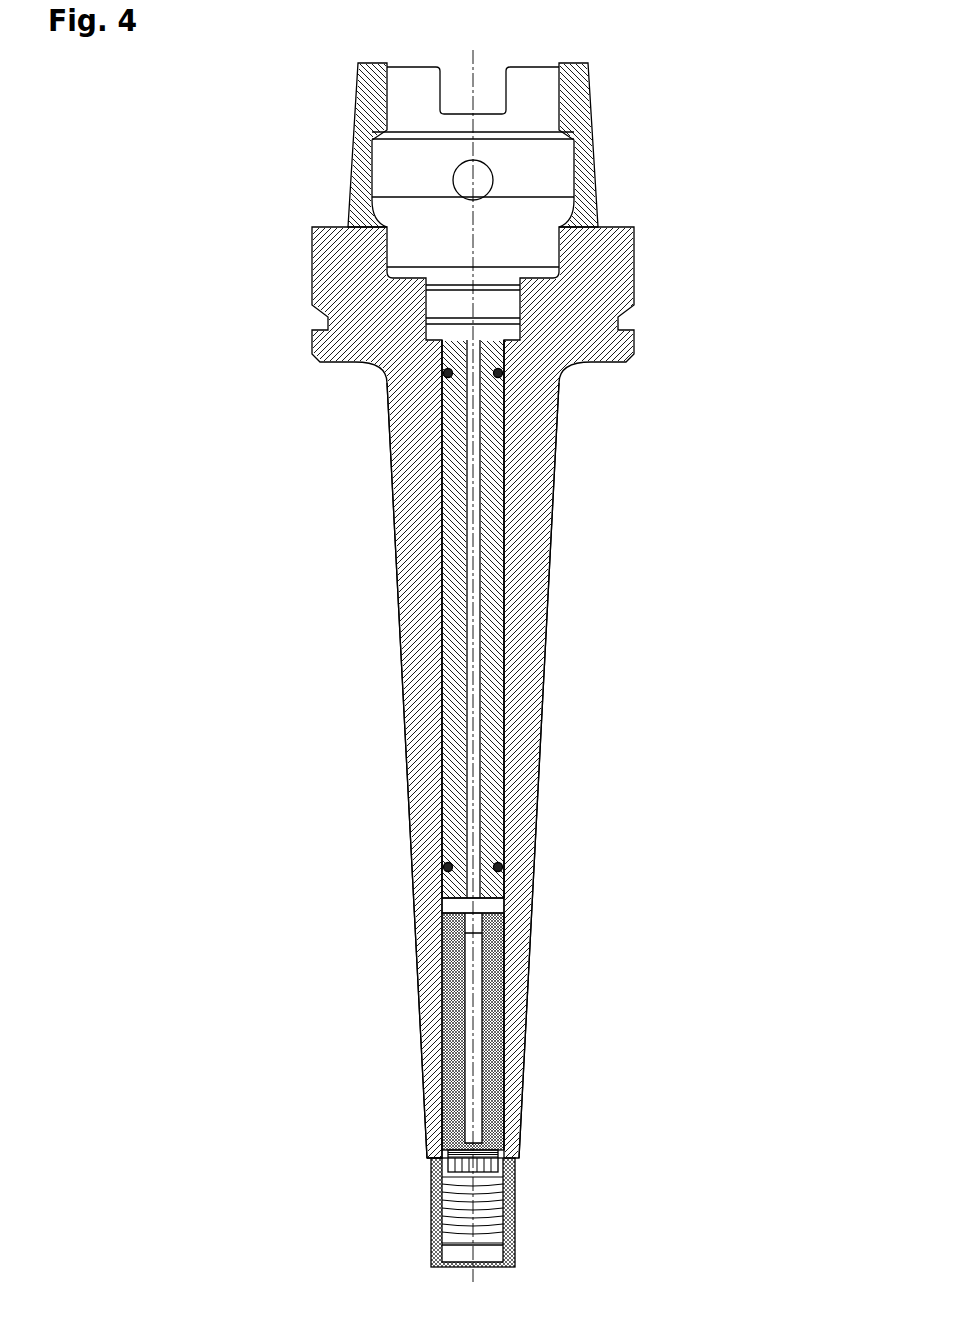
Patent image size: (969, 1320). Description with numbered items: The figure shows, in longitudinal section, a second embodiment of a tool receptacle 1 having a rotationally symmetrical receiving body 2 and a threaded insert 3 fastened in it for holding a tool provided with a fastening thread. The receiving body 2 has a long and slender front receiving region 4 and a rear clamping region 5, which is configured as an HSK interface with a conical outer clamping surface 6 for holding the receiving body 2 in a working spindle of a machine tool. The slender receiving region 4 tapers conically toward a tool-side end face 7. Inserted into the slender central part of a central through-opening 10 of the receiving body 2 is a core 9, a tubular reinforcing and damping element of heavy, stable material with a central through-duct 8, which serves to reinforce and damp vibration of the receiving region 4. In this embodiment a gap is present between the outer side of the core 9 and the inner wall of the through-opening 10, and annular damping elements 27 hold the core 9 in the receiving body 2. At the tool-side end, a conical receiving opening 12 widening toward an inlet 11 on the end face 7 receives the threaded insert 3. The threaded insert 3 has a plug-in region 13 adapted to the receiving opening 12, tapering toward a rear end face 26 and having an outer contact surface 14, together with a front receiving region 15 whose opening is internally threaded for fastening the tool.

The tool receptacle 1 is at (333, 738).
The receiving body 2 is at (639, 273).
The threaded insert 3 is at (512, 1016).
The receiving region 4 is at (522, 722).
The clamping region 5 is at (587, 178).
The outer clamping surface 6 is at (352, 180).
The end face 7 is at (518, 1158).
The through-duct 8 is at (475, 578).
The core 9 is at (447, 613).
The through-opening 10 is at (507, 835).
The inlet 11 is at (427, 1162).
The receiving opening 12 is at (455, 1090).
The plug-in region 13 is at (497, 1110).
The outer contact surface 14 is at (438, 1132).
The front receiving region 15 is at (507, 1215).
The rear end face 26 is at (446, 910).
The damping elements 27 is at (503, 377).